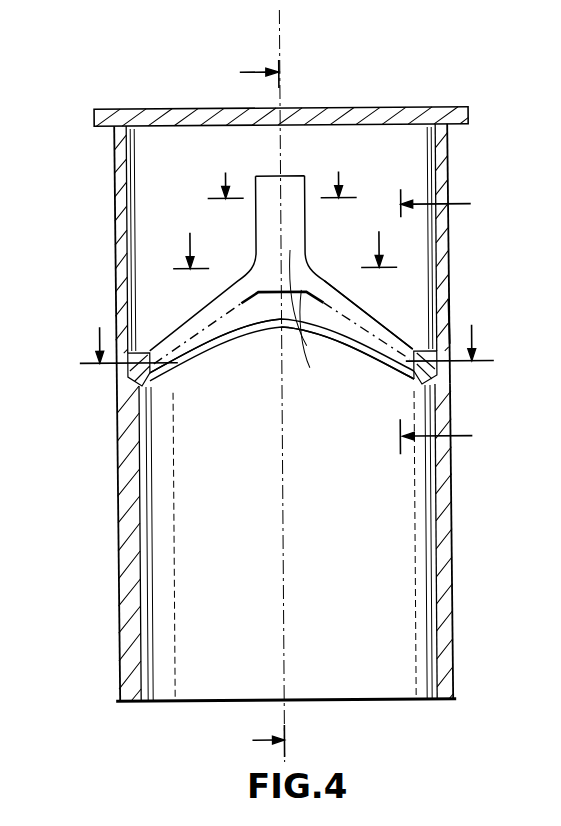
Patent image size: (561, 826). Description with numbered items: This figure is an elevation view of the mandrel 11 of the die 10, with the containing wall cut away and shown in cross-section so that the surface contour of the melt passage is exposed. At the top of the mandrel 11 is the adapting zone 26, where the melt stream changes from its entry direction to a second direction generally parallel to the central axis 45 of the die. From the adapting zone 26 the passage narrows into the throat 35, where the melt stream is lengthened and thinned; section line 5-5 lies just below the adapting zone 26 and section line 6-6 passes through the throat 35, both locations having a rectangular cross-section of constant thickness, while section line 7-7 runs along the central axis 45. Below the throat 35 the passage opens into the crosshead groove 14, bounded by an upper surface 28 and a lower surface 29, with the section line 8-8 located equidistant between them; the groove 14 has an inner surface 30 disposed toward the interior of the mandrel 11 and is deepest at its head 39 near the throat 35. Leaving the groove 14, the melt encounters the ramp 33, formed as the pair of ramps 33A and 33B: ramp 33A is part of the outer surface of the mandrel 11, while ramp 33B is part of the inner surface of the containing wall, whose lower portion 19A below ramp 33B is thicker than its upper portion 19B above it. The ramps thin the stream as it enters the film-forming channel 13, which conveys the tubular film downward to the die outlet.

The section line 5- 5 is at (281, 171).
The section line 6- 6 is at (285, 237).
The section line 7- 7 is at (250, 409).
The section line 8- 8 is at (286, 330).
The die 10 is at (274, 323).
The mandrel 11 is at (425, 166).
The channel 13 is at (452, 531).
The crosshead groove 14 is at (210, 330).
The lower portion of containing wall 19A is at (452, 604).
The upper portion of containing wall 19B is at (448, 196).
The adapting zone 26 is at (271, 200).
The upper surface of groove 28 is at (356, 315).
The lower surface of groove 29 is at (318, 318).
The inner surface of groove 30 is at (456, 335).
The ramp 33 is at (227, 333).
The ramp 33A is at (414, 398).
The ramp 33B is at (450, 383).
The throat 35 is at (313, 304).
The head of groove 39 is at (318, 336).
The central axis 45 is at (283, 30).